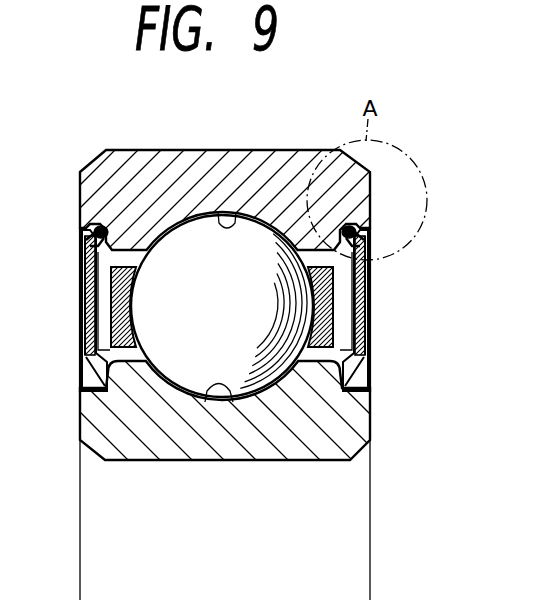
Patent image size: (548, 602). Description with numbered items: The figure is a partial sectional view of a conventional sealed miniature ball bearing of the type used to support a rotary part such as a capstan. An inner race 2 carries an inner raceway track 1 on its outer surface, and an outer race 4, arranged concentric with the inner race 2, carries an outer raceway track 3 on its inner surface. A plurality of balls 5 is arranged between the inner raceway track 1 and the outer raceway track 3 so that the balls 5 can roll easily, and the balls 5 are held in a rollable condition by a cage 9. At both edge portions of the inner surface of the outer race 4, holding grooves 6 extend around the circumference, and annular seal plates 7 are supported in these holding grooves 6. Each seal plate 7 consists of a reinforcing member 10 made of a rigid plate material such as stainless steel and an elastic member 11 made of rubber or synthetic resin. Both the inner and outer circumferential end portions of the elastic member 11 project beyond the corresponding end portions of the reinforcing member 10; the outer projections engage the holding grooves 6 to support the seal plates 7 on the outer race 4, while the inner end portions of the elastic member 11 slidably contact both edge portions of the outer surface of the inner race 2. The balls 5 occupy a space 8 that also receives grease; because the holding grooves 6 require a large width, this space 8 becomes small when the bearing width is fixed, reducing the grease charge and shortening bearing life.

The inner raceway track 1 is at (208, 400).
The inner race 2 is at (260, 445).
The outer raceway track 3 is at (227, 222).
The outer race 4 is at (170, 168).
The balls 5 is at (247, 243).
The holding grooves 6 is at (108, 226).
The seal plates 7 is at (85, 322).
The space 8 is at (345, 330).
The cage 9 is at (343, 308).
The reinforcing member 10 is at (85, 250).
The elastic member 11 is at (88, 290).